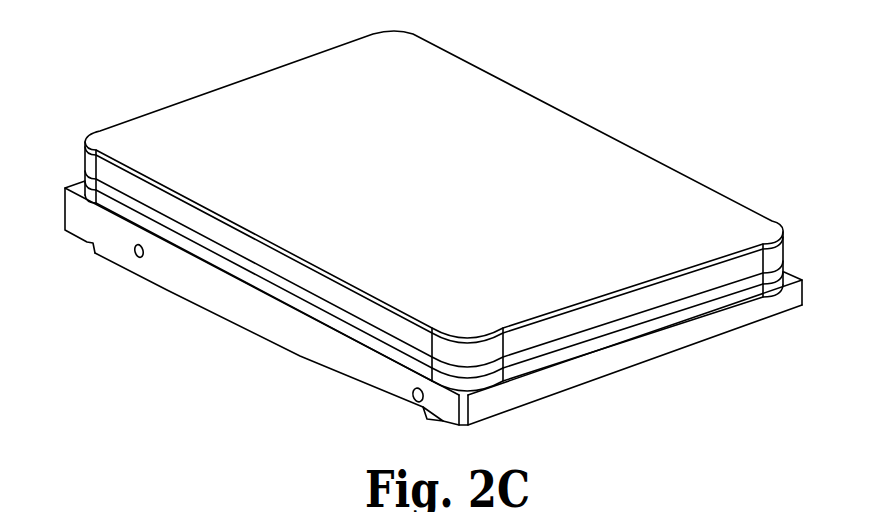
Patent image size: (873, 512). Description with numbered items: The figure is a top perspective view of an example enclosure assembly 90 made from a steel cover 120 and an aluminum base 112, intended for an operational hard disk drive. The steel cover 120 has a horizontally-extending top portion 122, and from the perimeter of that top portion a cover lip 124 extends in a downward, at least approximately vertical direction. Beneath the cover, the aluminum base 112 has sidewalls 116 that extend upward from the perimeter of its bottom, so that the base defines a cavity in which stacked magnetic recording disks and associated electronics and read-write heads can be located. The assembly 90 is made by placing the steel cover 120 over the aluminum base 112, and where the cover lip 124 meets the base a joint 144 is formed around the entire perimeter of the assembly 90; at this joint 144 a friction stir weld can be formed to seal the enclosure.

The assembly 90 is at (605, 70).
The aluminum base 112 is at (743, 322).
The sidewalls 116 is at (181, 238).
The steel cover 120 is at (710, 223).
The horizontally-extending top portion 122 is at (403, 178).
The cover lip 124 is at (108, 172).
The joint 144 is at (598, 341).